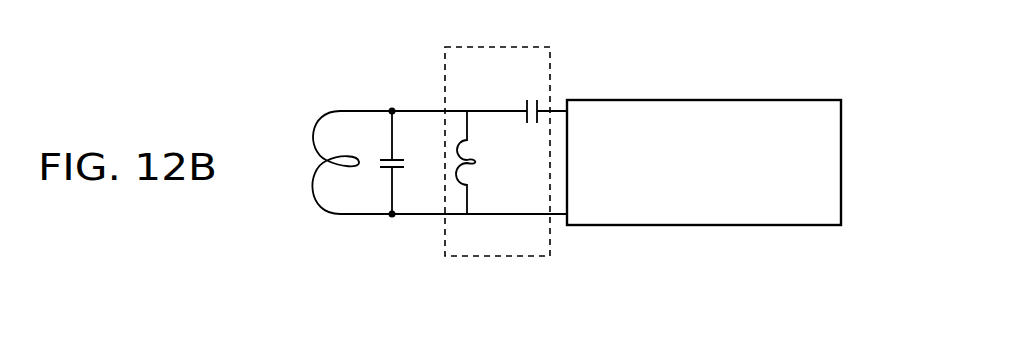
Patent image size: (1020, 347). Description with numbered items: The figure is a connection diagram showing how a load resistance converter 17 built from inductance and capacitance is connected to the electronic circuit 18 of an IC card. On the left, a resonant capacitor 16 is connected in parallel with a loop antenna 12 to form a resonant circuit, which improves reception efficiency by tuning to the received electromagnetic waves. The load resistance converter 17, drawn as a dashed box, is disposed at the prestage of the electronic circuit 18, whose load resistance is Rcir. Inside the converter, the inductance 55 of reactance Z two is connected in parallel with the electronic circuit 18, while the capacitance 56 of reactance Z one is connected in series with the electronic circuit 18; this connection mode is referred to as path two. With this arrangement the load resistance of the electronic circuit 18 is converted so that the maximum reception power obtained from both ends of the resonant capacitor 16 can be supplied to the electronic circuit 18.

The loop antenna 12 is at (317, 134).
The resonant capacitor 16 is at (403, 158).
The load resistance converter 17 is at (521, 47).
The electronic circuit 18 is at (677, 100).
The inductance 55 is at (479, 161).
The capacitance 56 is at (525, 104).